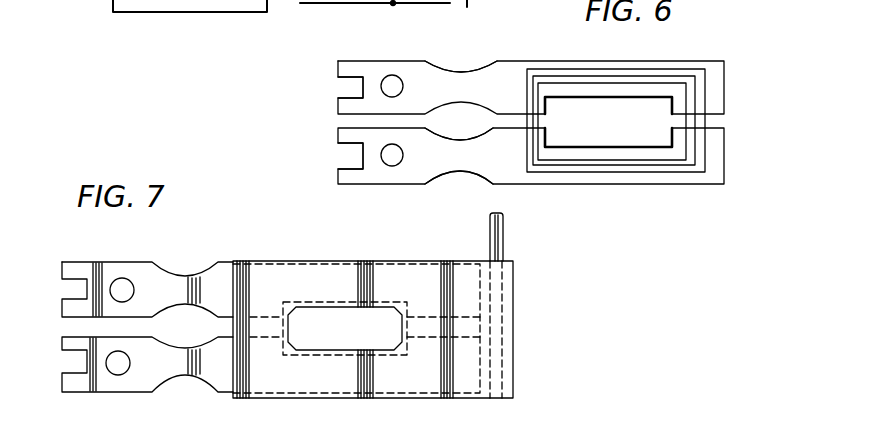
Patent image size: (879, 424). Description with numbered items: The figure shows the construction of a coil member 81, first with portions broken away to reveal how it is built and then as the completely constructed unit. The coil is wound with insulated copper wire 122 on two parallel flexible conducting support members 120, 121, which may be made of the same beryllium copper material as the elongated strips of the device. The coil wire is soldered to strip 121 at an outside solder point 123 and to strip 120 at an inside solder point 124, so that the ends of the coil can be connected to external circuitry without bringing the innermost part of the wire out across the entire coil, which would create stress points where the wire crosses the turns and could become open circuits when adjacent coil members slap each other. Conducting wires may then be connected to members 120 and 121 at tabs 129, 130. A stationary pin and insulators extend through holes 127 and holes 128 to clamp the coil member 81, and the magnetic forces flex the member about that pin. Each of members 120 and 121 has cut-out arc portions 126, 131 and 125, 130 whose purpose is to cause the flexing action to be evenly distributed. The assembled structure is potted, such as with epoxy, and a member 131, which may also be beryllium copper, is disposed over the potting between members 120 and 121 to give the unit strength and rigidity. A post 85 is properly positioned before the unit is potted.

In FIG. 7, the coil member 81 is at (524, 338).
In FIG. 7, the post 85 is at (503, 236).
In FIG. 6, the flexible conducting support member 120 is at (656, 122).
In FIG. 6, the flexible conducting support member 121 is at (708, 61).
In FIG. 6, the insulated copper wire 122 is at (703, 85).
In FIG. 6, the outside solder point 123 is at (510, 66).
In FIG. 6, the inside solder point 124 is at (549, 163).
In FIG. 6, the cut-out arc portion 125 is at (462, 43).
In FIG. 6, the cut-out arc portion 126 is at (462, 176).
In FIG. 6, the hole 127 is at (394, 75).
In FIG. 6, the hole 128 is at (392, 167).
In FIG. 6, the tab 129 is at (343, 78).
In FIG. 6, the tab 130 is at (343, 148).
In FIG. 6, the member 131 is at (446, 134).
In FIG. 7, the member 131 is at (236, 259).